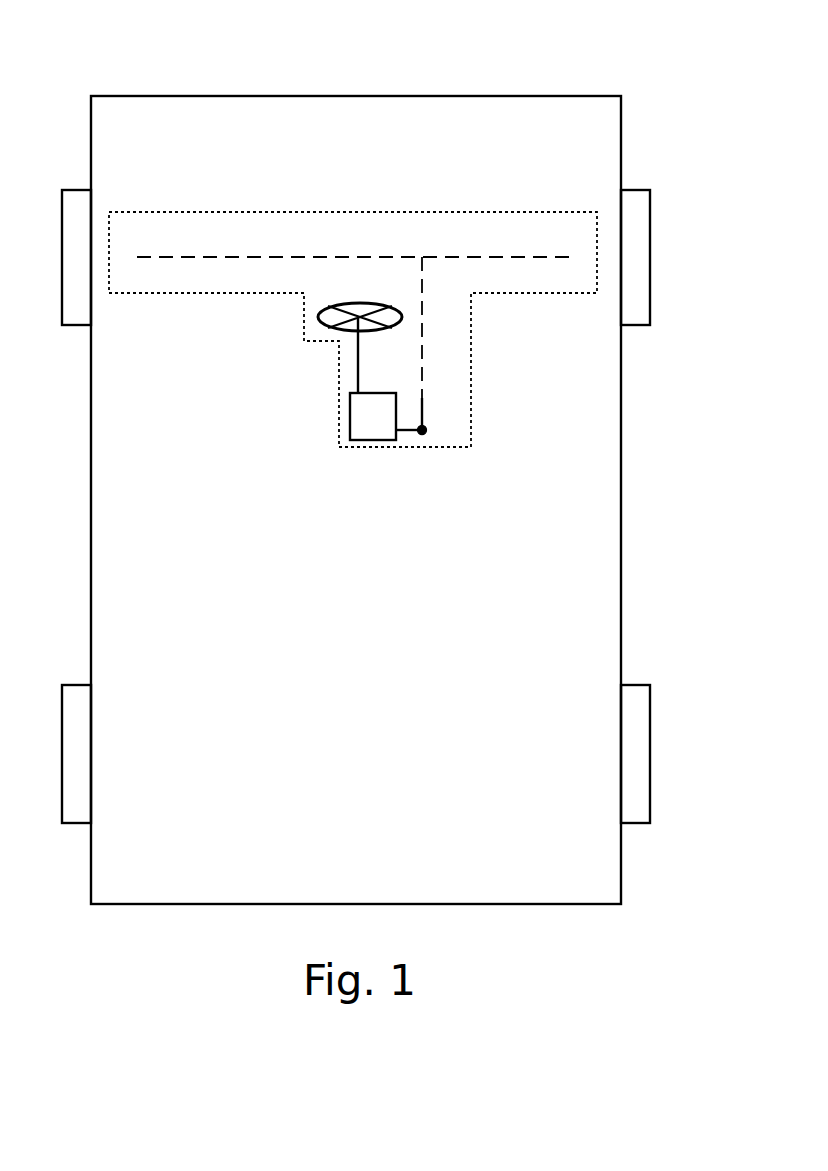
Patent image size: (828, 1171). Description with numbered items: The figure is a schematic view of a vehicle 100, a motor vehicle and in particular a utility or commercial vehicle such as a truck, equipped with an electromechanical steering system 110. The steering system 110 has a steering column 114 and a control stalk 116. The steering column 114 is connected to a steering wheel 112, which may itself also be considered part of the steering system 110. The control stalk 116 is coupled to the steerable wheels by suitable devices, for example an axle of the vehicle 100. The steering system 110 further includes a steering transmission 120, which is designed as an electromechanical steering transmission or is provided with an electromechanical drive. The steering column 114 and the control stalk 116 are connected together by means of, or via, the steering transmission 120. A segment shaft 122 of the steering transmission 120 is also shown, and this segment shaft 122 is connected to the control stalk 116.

The vehicle 100 is at (107, 95).
The electromechanical steering system 110 is at (135, 211).
The steering wheel 112 is at (360, 302).
The steering column 114 is at (358, 356).
The control stalk 116 is at (422, 413).
The steering transmission 120 is at (396, 402).
The segment shaft 122 is at (410, 432).